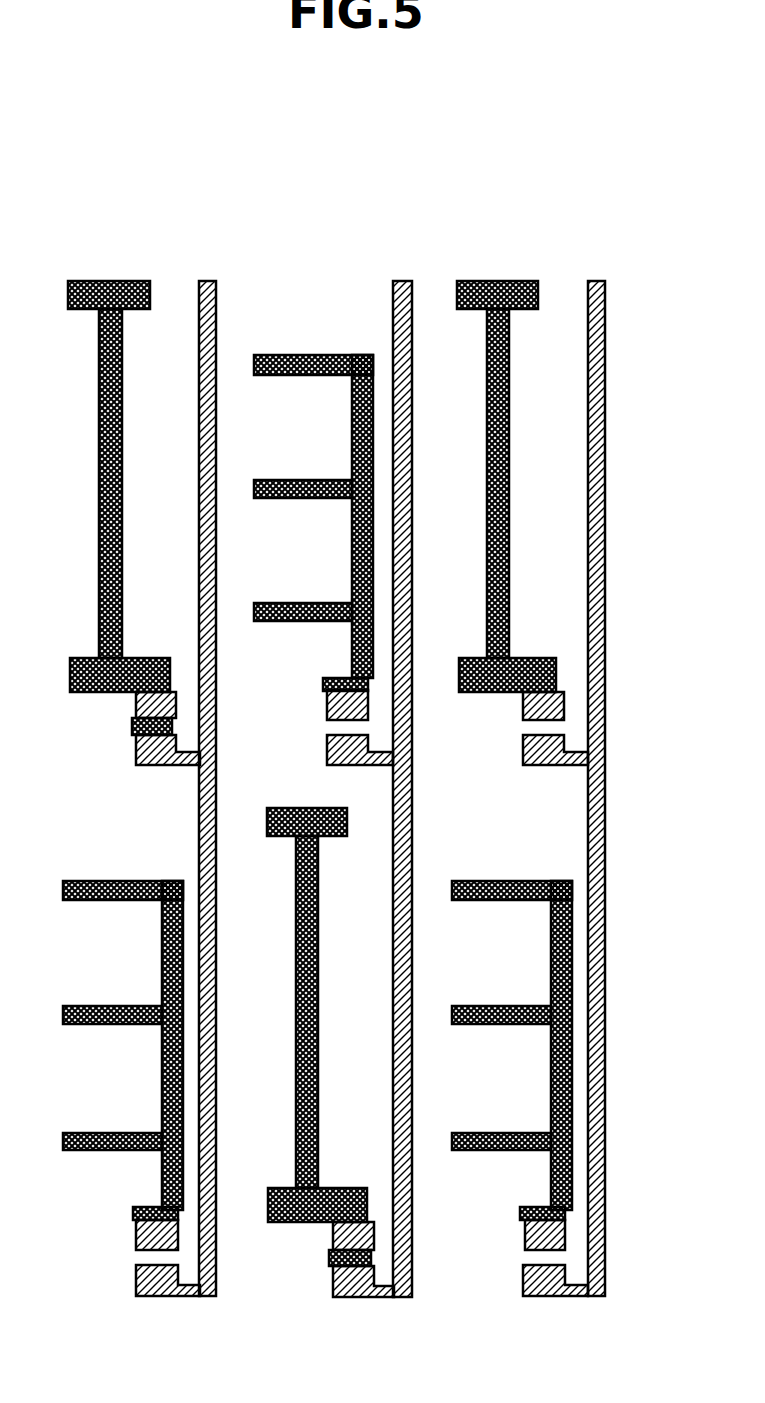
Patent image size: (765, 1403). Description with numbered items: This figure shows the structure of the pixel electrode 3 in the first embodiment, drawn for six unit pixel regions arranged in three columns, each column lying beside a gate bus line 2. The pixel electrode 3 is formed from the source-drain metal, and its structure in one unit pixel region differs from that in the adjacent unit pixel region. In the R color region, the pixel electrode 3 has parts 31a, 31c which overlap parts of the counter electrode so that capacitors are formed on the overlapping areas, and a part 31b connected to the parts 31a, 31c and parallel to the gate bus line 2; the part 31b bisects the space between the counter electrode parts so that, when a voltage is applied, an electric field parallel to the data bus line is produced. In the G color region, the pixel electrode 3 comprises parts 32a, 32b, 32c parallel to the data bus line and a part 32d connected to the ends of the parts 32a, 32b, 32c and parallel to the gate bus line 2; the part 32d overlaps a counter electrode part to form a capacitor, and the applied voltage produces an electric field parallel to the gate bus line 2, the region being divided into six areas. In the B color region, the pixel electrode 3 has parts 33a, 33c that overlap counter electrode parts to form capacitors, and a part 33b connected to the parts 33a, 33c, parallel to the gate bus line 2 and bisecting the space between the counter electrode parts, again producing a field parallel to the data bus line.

The gate bus line 2 is at (205, 282).
The pixel electrode 3 is at (522, 459).
The part of pixel electrode 31a is at (107, 283).
The part of pixel electrode 31b is at (117, 400).
The part of pixel electrode 31c is at (140, 658).
The part of pixel electrode 32a is at (295, 356).
The part of pixel electrode 32b is at (285, 481).
The part of pixel electrode 32c is at (280, 622).
The part of pixel electrode 32d is at (352, 548).
The part of pixel electrode 33a is at (528, 282).
The part of pixel electrode 33b is at (508, 400).
The part of pixel electrode 33c is at (530, 658).